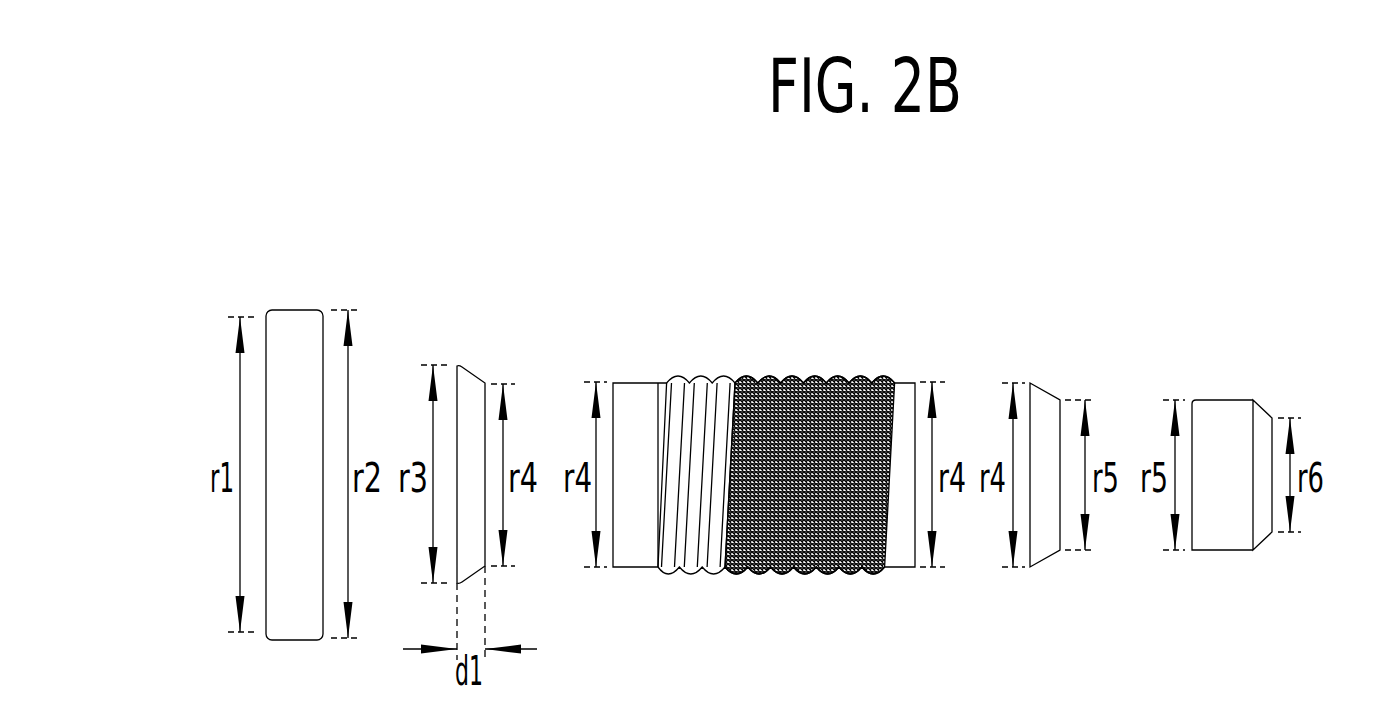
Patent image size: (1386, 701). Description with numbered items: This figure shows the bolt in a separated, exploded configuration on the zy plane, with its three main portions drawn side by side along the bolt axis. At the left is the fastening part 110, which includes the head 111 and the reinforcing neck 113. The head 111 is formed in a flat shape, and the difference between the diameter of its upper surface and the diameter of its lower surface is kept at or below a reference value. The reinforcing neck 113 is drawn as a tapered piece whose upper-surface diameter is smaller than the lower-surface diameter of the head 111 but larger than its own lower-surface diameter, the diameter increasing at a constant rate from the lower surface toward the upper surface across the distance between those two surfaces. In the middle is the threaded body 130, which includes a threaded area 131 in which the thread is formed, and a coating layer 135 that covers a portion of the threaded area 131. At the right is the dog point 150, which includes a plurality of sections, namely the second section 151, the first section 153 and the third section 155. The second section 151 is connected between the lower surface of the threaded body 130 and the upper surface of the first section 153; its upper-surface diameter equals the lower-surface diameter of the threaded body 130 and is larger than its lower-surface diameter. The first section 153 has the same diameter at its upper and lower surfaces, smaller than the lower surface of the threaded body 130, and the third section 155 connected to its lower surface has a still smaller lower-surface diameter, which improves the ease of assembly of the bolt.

The fastening part 110 is at (463, 222).
The head 111 is at (307, 310).
The reinforcing neck 113 is at (475, 376).
The threaded body 130 is at (832, 257).
The threaded area 131 is at (703, 375).
The coating layer 135 is at (818, 375).
The dog point 150 is at (1288, 282).
The second section 151 is at (1048, 387).
The first section 153 is at (1218, 398).
The third section 155 is at (1265, 407).